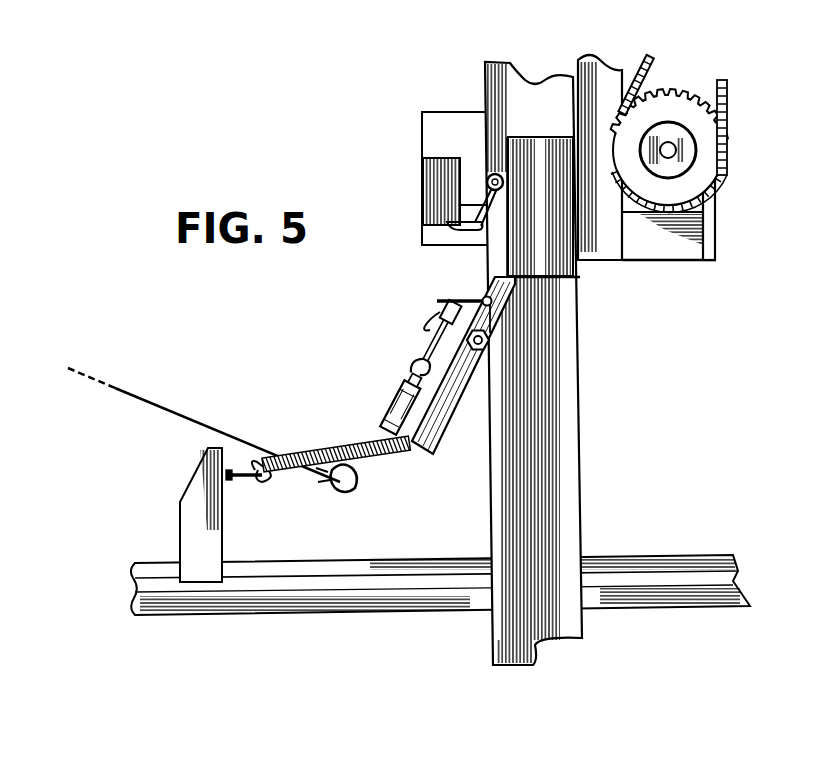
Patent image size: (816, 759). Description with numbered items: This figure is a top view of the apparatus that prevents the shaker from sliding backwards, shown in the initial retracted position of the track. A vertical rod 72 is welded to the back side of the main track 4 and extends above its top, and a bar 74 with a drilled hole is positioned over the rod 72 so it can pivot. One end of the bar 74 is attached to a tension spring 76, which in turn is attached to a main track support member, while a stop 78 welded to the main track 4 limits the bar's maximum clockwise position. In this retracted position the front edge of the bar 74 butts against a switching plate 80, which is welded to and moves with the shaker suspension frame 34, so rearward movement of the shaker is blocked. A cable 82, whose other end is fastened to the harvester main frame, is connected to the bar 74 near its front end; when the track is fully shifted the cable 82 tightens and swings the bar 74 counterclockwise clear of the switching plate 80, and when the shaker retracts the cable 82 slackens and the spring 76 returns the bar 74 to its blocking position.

The main track 4 is at (577, 467).
The shaker suspension frame 34 is at (610, 92).
The vertical rod 72 is at (500, 356).
The bar 74 is at (452, 433).
The tension spring 76 is at (340, 445).
The stop 78 is at (489, 338).
The switching plate 80 is at (523, 167).
The cable 82 is at (377, 424).